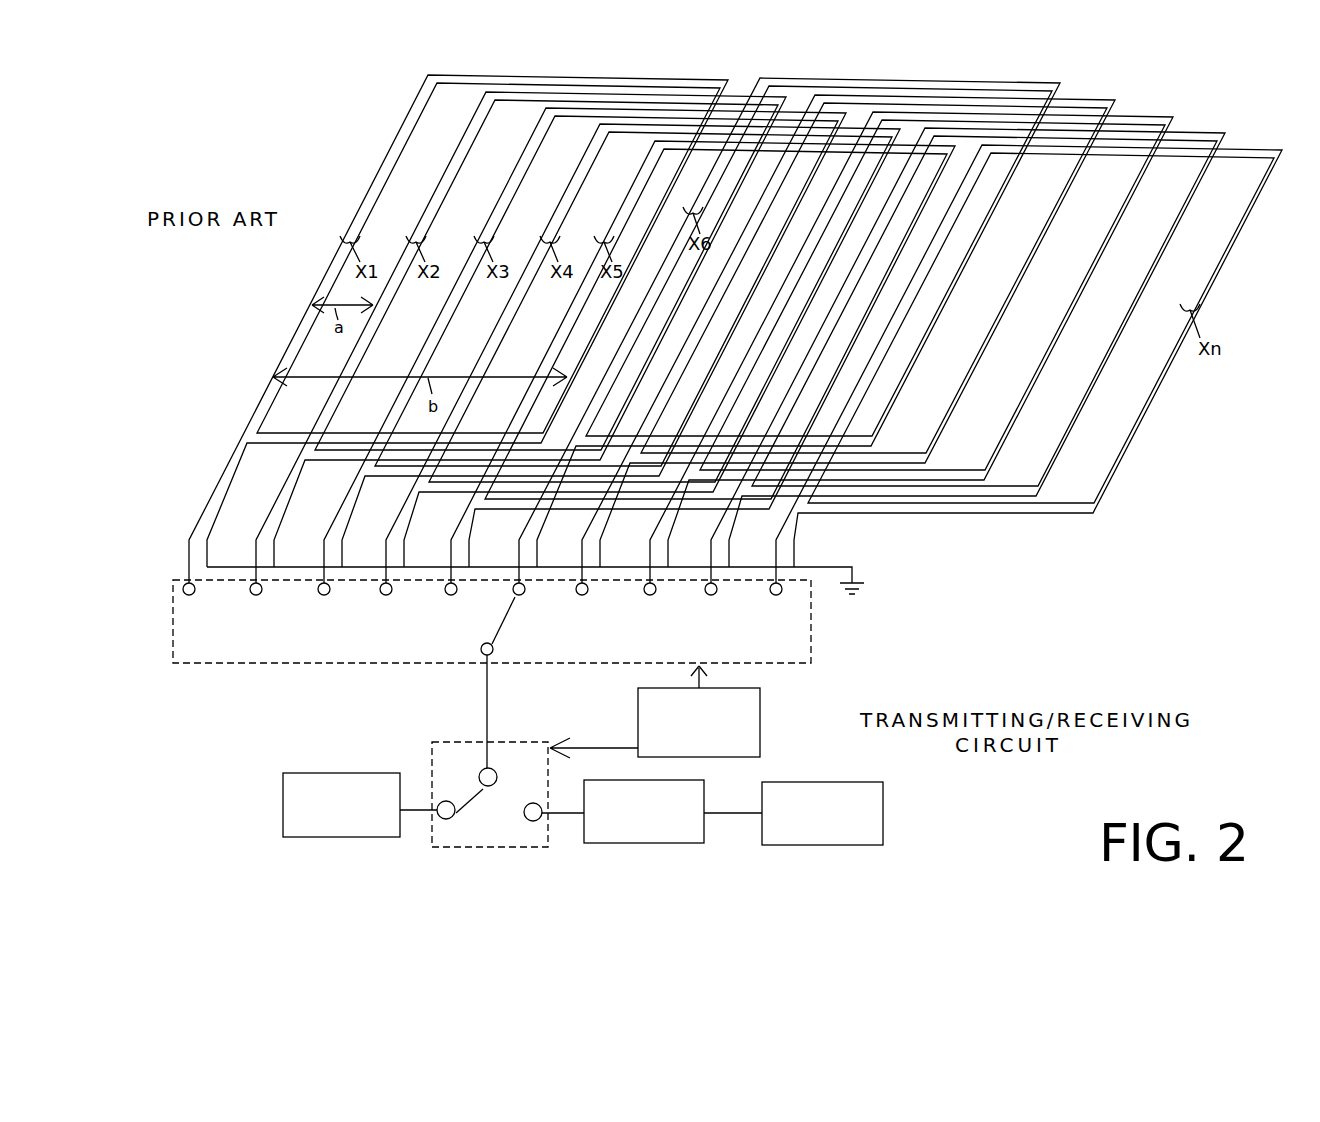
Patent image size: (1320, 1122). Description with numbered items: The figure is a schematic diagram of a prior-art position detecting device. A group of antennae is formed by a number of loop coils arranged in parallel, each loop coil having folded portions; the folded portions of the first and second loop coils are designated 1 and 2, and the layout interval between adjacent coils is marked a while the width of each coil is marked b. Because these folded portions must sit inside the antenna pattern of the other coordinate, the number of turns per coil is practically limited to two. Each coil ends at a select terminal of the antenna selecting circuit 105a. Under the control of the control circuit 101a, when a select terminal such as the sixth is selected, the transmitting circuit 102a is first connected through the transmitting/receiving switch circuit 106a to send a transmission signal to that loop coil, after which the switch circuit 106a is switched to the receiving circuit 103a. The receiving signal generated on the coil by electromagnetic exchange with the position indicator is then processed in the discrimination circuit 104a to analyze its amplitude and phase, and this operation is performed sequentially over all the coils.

The folded portion of loop coil X1 1 is at (459, 77).
The folded portion of loop coil X2 2 is at (588, 92).
The control circuit 101a is at (762, 728).
The transmitting circuit 102a is at (323, 772).
The receiving circuit 103a is at (647, 845).
The discrimination circuit 104a is at (870, 847).
The antenna selecting circuit 105a is at (189, 665).
The transmitting/receiving switch circuit 106a is at (515, 740).